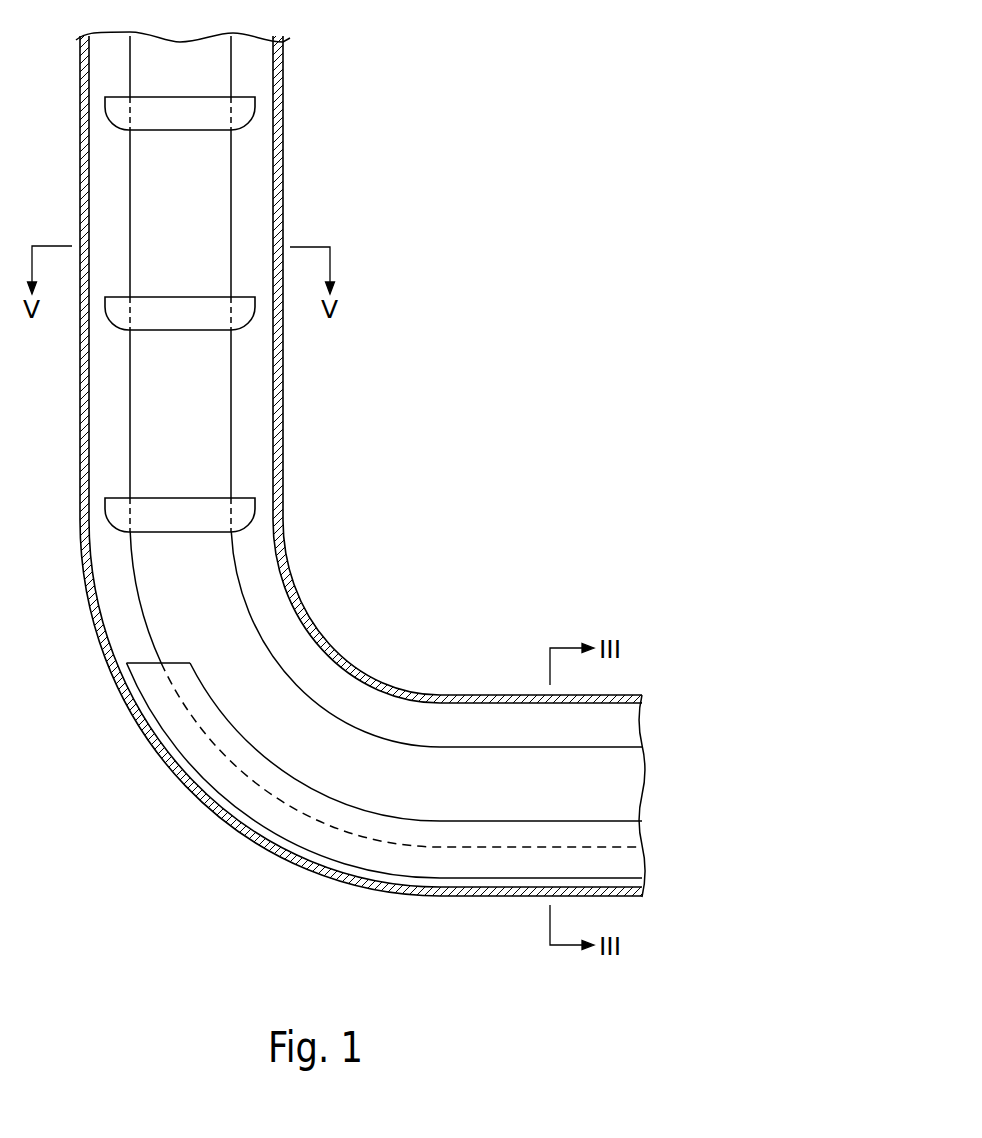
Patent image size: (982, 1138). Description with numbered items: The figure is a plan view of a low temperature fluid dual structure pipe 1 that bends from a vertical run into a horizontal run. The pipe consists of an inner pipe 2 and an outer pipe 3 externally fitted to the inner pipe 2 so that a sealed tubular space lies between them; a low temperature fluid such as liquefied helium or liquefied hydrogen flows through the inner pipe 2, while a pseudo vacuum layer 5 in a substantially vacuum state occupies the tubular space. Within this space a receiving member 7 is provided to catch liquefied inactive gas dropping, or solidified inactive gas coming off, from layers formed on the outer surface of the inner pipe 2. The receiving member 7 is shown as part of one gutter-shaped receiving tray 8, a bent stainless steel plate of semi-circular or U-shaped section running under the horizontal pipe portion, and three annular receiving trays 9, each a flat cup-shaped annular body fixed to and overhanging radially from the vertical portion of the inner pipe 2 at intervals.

The low temperature fluid dual structure pipe 1 is at (448, 176).
The inner pipe 2 is at (227, 610).
The outer pipe 3 is at (332, 644).
The pseudo vacuum layer 5 is at (387, 710).
The receiving member 7 is at (373, 524).
The gutter-shaped receiving tray 8 is at (367, 857).
The annular receiving tray 9 is at (241, 113).